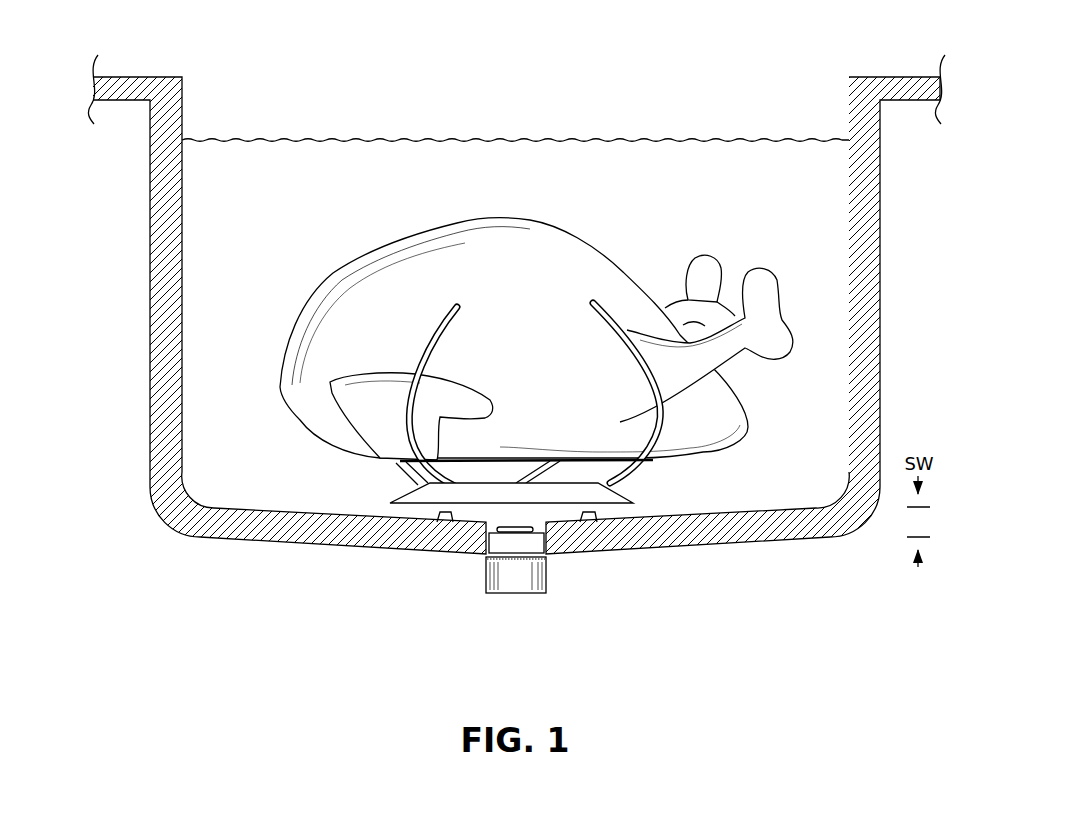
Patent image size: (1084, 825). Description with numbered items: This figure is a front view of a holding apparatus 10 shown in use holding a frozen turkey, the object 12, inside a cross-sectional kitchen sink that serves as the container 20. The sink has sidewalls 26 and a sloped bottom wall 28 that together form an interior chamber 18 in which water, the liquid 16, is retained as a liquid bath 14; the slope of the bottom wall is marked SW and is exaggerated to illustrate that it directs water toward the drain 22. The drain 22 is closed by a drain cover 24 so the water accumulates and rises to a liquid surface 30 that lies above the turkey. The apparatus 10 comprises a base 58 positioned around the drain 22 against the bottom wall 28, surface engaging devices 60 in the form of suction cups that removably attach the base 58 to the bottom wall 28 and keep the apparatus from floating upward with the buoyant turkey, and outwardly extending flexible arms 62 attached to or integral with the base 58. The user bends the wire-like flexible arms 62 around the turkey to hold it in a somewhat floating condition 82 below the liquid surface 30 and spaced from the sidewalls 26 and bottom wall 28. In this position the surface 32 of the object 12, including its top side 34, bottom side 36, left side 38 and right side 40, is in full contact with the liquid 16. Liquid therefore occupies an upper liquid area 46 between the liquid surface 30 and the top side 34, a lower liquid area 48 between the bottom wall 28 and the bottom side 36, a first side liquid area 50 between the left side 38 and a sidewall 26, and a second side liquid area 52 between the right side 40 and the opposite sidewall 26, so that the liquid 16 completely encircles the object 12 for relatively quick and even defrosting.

The holding apparatus 10 is at (553, 506).
The object 12 is at (478, 263).
The liquid bath 14 is at (263, 92).
The liquid 16 is at (203, 278).
The interior chamber 18 is at (575, 125).
The container 20 is at (167, 207).
The drain 22 is at (512, 570).
The drain cover 24 is at (513, 521).
The sidewall 26 is at (847, 174).
The bottom wall 28 is at (279, 506).
The liquid surface 30 is at (716, 140).
The surface 32 is at (315, 368).
The top side 34 is at (433, 230).
The bottom side 36 is at (668, 460).
The left side 38 is at (297, 333).
The right side 40 is at (751, 433).
The upper liquid area 46 is at (568, 192).
The lower liquid area 48 is at (383, 475).
The first side liquid area 50 is at (223, 338).
The second side liquid area 52 is at (797, 462).
The base 58 is at (393, 504).
The surface engaging devices 60 is at (588, 522).
The flexible arms 62 is at (433, 342).
The floating condition 82 is at (268, 317).